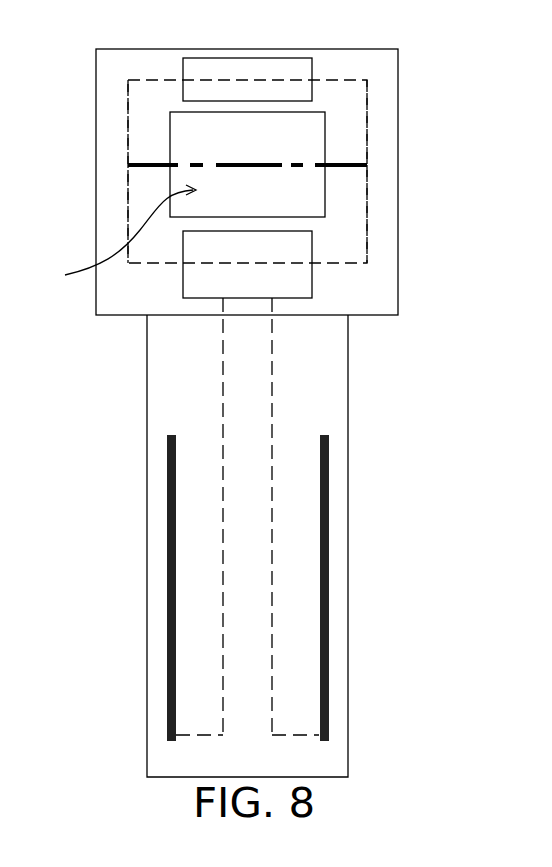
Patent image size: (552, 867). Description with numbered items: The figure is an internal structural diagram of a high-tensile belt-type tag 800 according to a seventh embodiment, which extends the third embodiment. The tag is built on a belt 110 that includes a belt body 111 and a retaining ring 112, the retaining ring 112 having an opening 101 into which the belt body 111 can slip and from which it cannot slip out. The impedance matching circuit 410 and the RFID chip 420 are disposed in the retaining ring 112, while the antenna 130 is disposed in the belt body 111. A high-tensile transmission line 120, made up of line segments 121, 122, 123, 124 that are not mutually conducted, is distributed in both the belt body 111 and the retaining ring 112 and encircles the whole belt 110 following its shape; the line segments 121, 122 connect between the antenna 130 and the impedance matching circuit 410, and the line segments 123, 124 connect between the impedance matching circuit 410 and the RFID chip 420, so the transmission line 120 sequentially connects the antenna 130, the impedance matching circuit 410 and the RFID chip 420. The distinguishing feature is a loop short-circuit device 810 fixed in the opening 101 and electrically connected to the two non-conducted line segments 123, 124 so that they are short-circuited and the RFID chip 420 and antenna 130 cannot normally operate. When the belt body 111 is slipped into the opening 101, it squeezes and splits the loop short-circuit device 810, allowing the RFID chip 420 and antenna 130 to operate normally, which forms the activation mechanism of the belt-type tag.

The high-tensile belt-type tag 800 is at (445, 763).
The belt 110 is at (475, 270).
The belt body 111 is at (348, 400).
The retaining ring 112 is at (398, 257).
The high-tensile transmission line 120 is at (537, 88).
The line segment 121 is at (223, 383).
The line segment 122 is at (272, 355).
The line segment 123 is at (128, 133).
The line segment 124 is at (367, 130).
The antenna 130 is at (167, 583).
The opening 101 is at (113, 236).
The impedance matching circuit 410 is at (312, 238).
The RFID chip 420 is at (312, 70).
The loop short-circuit device 810 is at (344, 170).